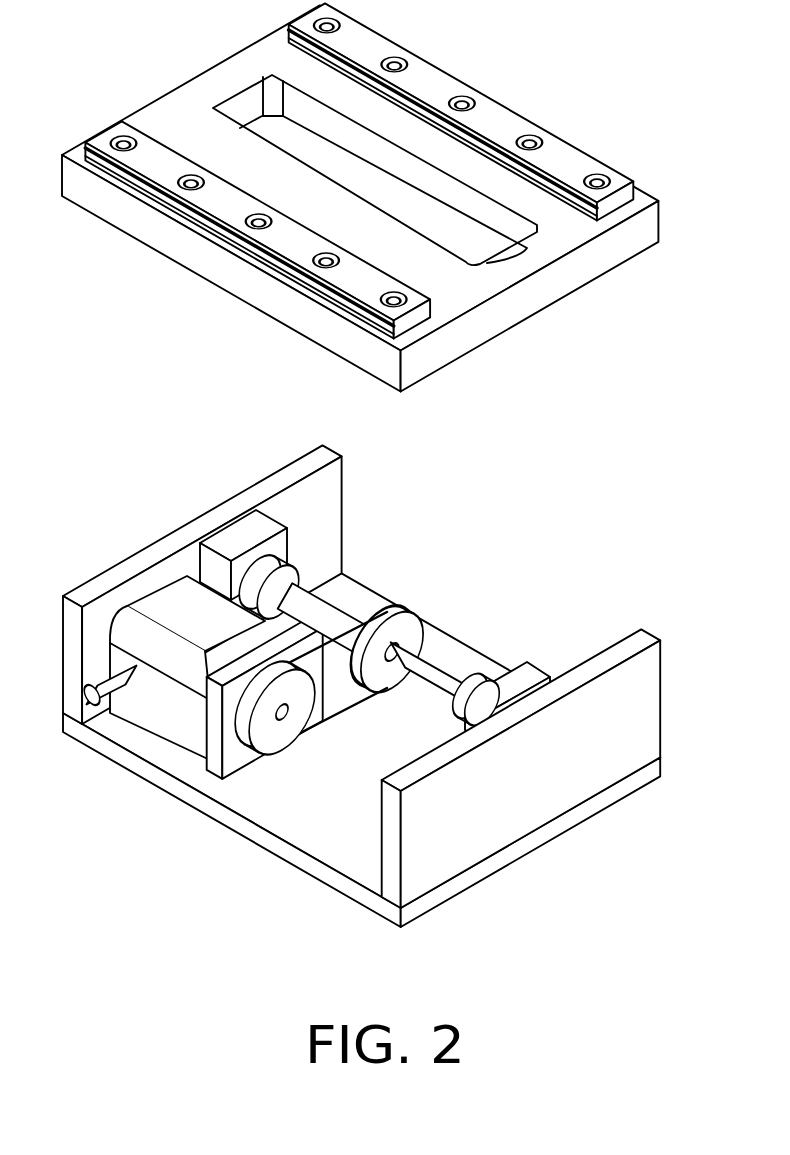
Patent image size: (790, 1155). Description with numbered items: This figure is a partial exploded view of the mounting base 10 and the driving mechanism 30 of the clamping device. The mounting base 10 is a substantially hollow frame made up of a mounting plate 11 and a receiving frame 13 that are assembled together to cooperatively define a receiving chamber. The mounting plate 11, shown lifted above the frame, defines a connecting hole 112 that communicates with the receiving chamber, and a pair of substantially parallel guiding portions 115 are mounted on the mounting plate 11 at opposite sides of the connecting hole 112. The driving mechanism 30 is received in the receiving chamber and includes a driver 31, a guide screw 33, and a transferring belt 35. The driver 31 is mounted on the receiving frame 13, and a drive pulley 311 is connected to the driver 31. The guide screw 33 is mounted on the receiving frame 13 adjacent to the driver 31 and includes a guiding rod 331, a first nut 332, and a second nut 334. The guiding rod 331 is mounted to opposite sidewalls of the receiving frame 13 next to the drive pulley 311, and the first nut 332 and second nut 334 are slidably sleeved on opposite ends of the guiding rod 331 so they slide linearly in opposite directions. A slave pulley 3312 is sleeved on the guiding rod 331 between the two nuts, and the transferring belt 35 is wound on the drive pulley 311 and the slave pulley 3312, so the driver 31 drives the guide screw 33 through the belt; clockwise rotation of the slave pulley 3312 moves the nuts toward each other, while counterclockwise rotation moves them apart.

The mounting base 10 is at (543, 805).
The mounting plate 11 is at (580, 225).
The connecting hole 112 is at (407, 165).
The guiding portions 115 is at (560, 153).
The receiving frame 13 is at (638, 692).
The driving mechanism 30 is at (300, 639).
The driver 31 is at (172, 698).
The drive pulley 311 is at (272, 733).
The guide screw 33 is at (355, 579).
The guiding rod 331 is at (413, 662).
The slave pulley 3312 is at (393, 620).
The first nut 332 is at (480, 680).
The second nut 334 is at (296, 596).
The transferring belt 35 is at (312, 665).